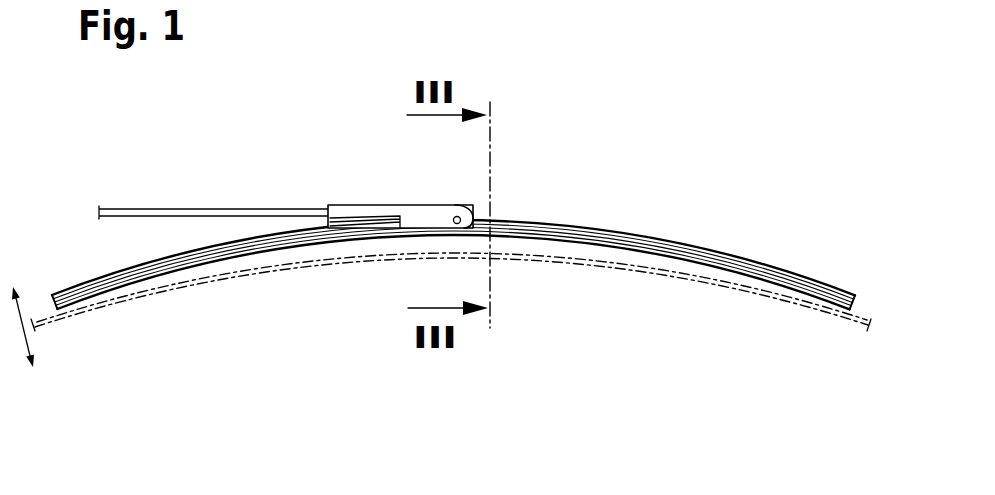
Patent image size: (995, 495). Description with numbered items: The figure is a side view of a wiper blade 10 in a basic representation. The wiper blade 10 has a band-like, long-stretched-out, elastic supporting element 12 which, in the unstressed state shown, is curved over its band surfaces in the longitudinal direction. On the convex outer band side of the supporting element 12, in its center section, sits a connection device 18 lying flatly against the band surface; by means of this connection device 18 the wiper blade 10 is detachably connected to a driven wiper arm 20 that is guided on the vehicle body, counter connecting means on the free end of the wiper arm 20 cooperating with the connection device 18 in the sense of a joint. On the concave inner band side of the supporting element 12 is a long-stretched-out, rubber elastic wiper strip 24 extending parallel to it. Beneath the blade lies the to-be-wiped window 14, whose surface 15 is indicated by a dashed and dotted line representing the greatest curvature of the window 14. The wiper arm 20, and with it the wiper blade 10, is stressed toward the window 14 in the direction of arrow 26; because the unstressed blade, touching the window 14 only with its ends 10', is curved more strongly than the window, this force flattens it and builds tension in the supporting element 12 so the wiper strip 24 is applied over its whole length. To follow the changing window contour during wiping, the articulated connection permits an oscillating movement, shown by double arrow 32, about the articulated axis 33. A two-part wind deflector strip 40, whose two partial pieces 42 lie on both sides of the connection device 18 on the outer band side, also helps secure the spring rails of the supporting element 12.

The wiper blade 10 is at (452, 260).
The ends of the wiper blade 10' is at (452, 262).
The supporting element 12 is at (88, 298).
The to-be-wiped window 14 is at (357, 260).
The window surface 15 is at (574, 254).
The connection device 18 is at (471, 187).
The wiper arm 20 is at (317, 181).
The wiper strip 24 is at (668, 257).
The arrow 26 is at (435, 181).
The double arrow 32 is at (24, 328).
The articulated axis 33 is at (473, 207).
The wind deflector strip 40 is at (675, 229).
The partial pieces of the wind deflector strip 42 is at (722, 257).